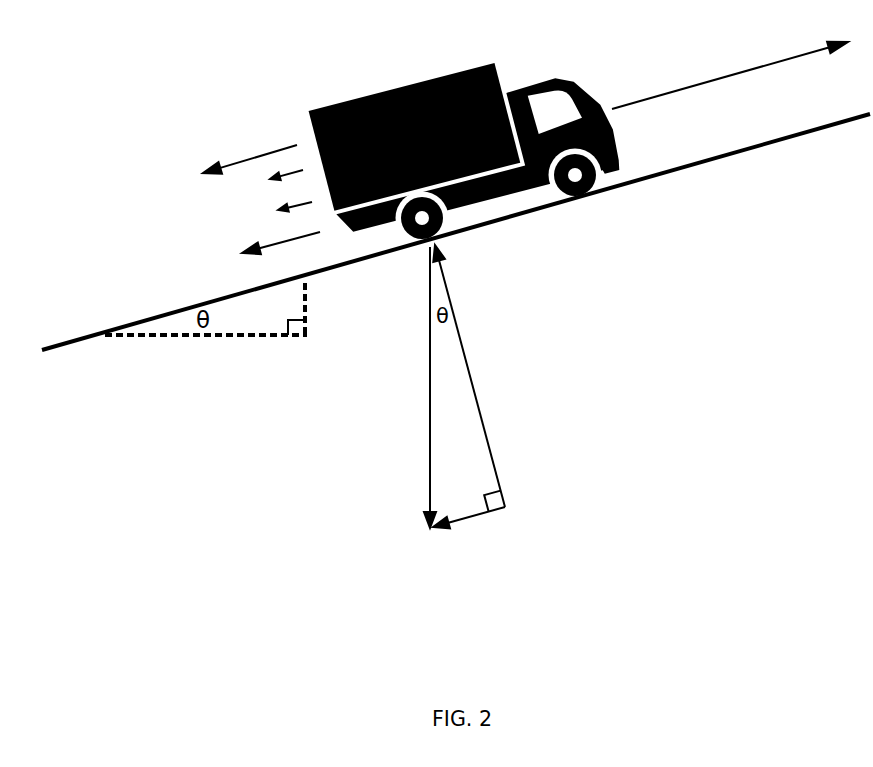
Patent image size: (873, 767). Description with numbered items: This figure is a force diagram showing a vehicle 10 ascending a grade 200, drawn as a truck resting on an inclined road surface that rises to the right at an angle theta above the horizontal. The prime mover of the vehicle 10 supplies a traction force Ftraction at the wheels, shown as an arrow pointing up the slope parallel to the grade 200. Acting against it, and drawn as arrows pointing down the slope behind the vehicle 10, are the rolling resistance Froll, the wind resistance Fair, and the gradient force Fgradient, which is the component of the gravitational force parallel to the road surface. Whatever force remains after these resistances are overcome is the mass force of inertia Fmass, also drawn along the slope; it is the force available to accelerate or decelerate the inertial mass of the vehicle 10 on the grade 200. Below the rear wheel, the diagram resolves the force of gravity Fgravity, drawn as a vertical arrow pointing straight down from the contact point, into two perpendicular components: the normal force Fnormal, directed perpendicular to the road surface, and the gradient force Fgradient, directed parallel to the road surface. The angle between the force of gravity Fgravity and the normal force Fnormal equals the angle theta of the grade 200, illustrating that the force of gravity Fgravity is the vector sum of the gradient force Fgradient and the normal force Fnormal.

The vehicle 10 is at (393, 88).
The grade 200 is at (700, 167).
The mass force of inertia Fmass is at (224, 152).
The rolling resistance Froll is at (266, 187).
The wind resistance Fair is at (280, 219).
The gradient force Fgradient is at (359, 394).
The traction force Ftraction is at (730, 68).
The force of gravity Fgravity is at (393, 387).
The normal force Fnormal is at (500, 378).